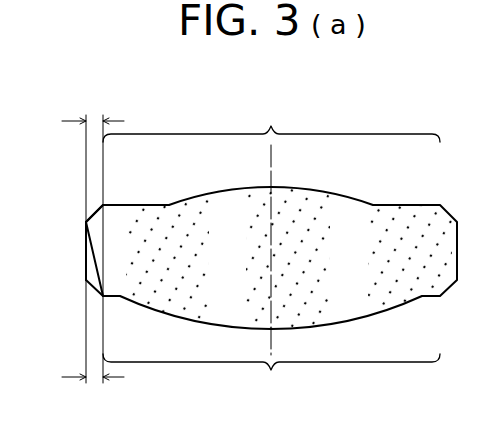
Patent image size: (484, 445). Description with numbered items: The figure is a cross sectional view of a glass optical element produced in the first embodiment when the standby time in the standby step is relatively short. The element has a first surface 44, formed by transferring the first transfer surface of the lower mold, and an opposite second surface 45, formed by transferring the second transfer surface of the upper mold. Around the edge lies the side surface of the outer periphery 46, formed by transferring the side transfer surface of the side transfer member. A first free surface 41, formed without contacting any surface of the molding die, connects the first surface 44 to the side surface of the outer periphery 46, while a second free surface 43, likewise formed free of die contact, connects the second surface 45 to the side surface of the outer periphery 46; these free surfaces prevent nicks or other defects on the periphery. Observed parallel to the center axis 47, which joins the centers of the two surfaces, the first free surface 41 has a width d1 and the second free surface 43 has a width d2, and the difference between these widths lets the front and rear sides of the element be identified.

The first free surface 41 is at (95, 285).
The second free surface 43 is at (94, 212).
The first surface 44 is at (271, 379).
The second surface 45 is at (271, 120).
The side surface of the outer periphery 46 is at (86, 250).
The center axis 47 is at (271, 162).
The width of the first free surface d1 is at (93, 393).
The width of the second free surface d2 is at (93, 103).